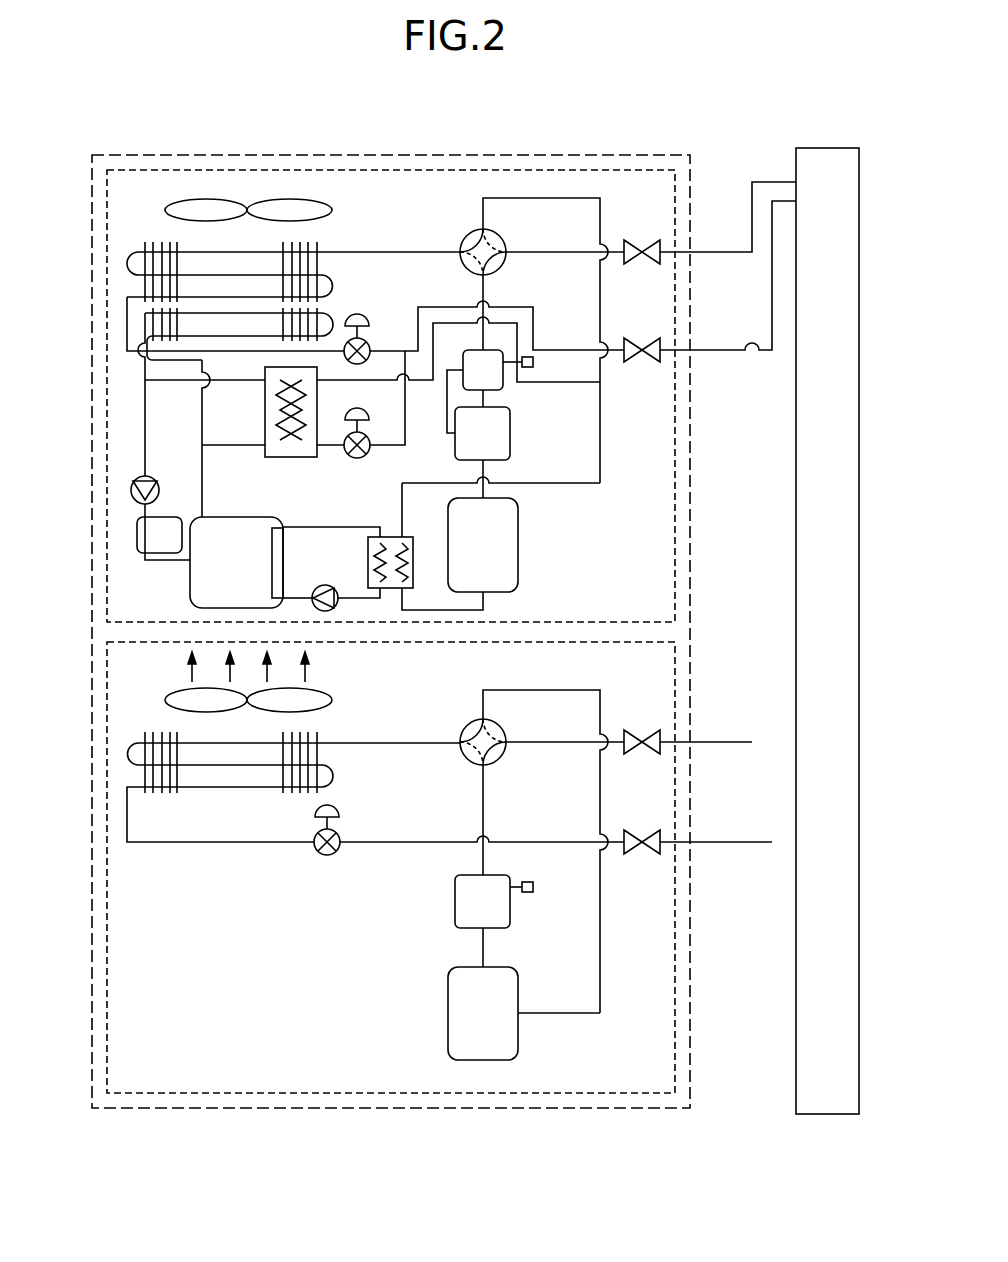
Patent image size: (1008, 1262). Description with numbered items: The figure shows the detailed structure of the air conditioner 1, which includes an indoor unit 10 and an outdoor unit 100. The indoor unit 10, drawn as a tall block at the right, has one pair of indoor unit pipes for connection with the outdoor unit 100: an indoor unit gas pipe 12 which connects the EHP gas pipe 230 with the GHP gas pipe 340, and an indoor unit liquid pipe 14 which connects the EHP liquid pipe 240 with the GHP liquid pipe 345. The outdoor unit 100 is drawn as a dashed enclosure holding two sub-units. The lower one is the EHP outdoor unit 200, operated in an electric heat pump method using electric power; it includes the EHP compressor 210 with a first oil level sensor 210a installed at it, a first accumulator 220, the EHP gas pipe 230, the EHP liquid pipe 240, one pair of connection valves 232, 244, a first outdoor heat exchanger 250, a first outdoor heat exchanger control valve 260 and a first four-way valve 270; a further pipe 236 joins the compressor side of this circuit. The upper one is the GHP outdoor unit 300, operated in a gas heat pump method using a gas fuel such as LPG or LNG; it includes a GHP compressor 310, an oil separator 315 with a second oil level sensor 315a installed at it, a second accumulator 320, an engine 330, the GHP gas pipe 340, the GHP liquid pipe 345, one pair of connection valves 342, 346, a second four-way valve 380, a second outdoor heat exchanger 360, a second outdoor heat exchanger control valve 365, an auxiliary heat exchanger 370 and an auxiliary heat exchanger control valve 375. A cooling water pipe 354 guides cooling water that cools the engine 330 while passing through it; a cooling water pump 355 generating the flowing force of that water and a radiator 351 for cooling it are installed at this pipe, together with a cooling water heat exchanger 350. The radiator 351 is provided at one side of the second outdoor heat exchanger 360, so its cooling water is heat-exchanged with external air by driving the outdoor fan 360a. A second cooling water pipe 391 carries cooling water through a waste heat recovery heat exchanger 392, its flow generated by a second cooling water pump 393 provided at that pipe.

The air conditioner 1 is at (717, 129).
The indoor unit 10 is at (830, 1116).
The indoor unit gas pipe 12 is at (752, 550).
The indoor unit liquid pipe 14 is at (772, 610).
The outdoor unit 100 is at (428, 1110).
The EHP outdoor unit 200 is at (310, 1095).
The EHP compressor 210 is at (512, 915).
The first oil level sensor 210a is at (535, 888).
The first accumulator 220 is at (447, 1013).
The EHP gas pipe 230 is at (537, 740).
The connection valve 232 is at (637, 730).
The suction pipe 236 is at (602, 970).
The EHP liquid pipe 240 is at (524, 840).
The connection valve 244 is at (637, 830).
The first outdoor heat exchanger 250 is at (207, 793).
The first outdoor heat exchanger control valve 260 is at (327, 856).
The first four-way valve 270 is at (465, 730).
The GHP outdoor unit 300 is at (355, 169).
The GHP compressor 310 is at (512, 447).
The oil separator 315 is at (505, 380).
The second oil level sensor 315a is at (535, 362).
The second accumulator 320 is at (520, 572).
The engine 330 is at (222, 517).
The GHP gas pipe 340 is at (537, 250).
The connection valve 342 is at (637, 240).
The GHP liquid pipe 345 is at (519, 306).
The connection valve 346 is at (637, 338).
The cooling water heat exchanger 350 is at (160, 554).
The radiator 351 is at (141, 326).
The cooling water pipe 354 is at (145, 420).
The cooling water pump 355 is at (158, 478).
The second outdoor heat exchanger 360 is at (340, 248).
The outdoor fan 360a is at (205, 199).
The second outdoor heat exchanger control valve 365 is at (368, 340).
The auxiliary heat exchanger 370 is at (298, 458).
The auxiliary heat exchanger control valve 375 is at (368, 436).
The second four-way valve 380 is at (465, 240).
The cooling water pipe 391 is at (358, 604).
The waste heat recovery heat exchanger 392 is at (390, 537).
The second cooling water pump 393 is at (322, 585).